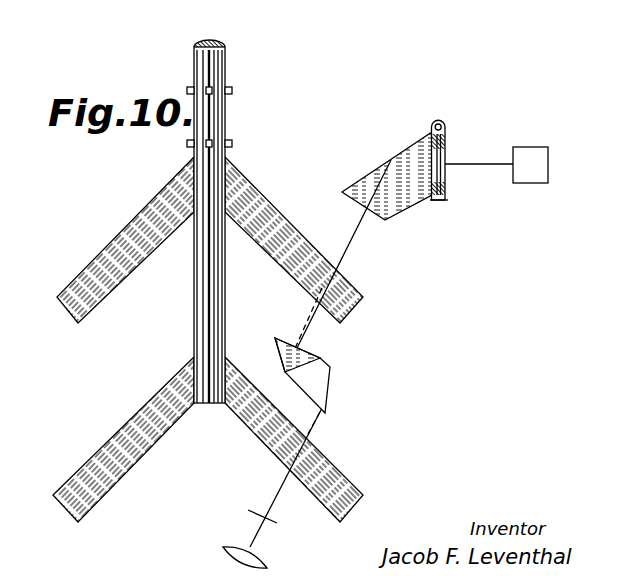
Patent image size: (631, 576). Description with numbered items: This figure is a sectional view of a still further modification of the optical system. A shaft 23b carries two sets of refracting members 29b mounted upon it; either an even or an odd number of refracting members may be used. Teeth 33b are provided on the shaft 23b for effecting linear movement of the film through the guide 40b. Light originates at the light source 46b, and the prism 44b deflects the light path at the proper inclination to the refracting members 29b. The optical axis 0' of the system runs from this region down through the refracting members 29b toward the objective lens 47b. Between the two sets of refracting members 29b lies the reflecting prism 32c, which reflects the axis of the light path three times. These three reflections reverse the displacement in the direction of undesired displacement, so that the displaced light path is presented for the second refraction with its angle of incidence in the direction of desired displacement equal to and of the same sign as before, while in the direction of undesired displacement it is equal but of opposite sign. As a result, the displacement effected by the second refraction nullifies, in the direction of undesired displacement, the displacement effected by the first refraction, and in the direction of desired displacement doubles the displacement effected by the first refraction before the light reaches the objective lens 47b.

The shaft 23b is at (206, 58).
The teeth 33b is at (231, 143).
The refracting members 29b is at (244, 368).
The guide 40b is at (433, 152).
The prism 44b is at (402, 190).
The light source 46b is at (541, 167).
The optical axis 0' is at (321, 353).
The reflecting prism 32c is at (329, 365).
The objective lens 47b is at (224, 551).